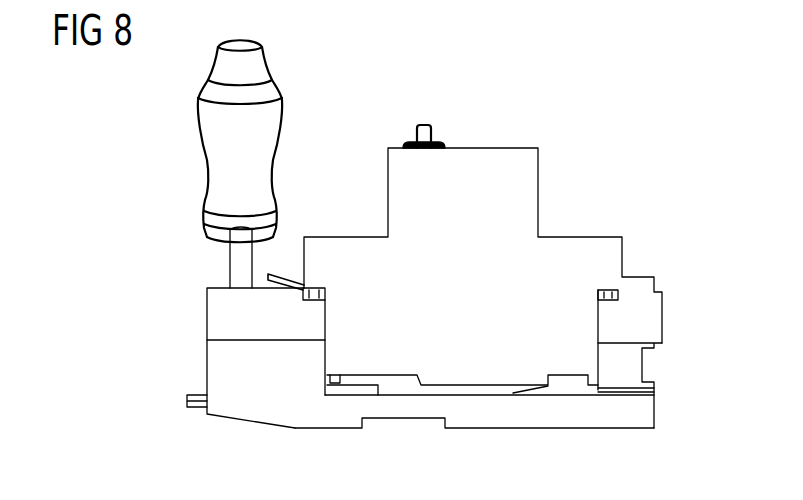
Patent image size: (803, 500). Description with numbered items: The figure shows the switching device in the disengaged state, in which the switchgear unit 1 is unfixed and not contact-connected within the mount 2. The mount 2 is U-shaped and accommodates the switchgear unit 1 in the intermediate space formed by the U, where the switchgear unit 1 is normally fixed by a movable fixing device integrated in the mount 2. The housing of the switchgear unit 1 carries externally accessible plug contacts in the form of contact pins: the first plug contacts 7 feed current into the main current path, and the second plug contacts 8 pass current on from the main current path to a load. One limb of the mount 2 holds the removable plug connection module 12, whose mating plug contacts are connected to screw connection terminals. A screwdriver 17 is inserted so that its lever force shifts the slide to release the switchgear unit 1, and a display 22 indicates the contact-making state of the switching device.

The switchgear unit 1 is at (522, 185).
The mount 2 is at (503, 412).
The first plug contacts 7 is at (312, 288).
The second plug contacts 8 is at (618, 300).
The plug connection module 12 is at (650, 333).
The screwdriver 17 is at (220, 120).
The display 22 is at (276, 293).